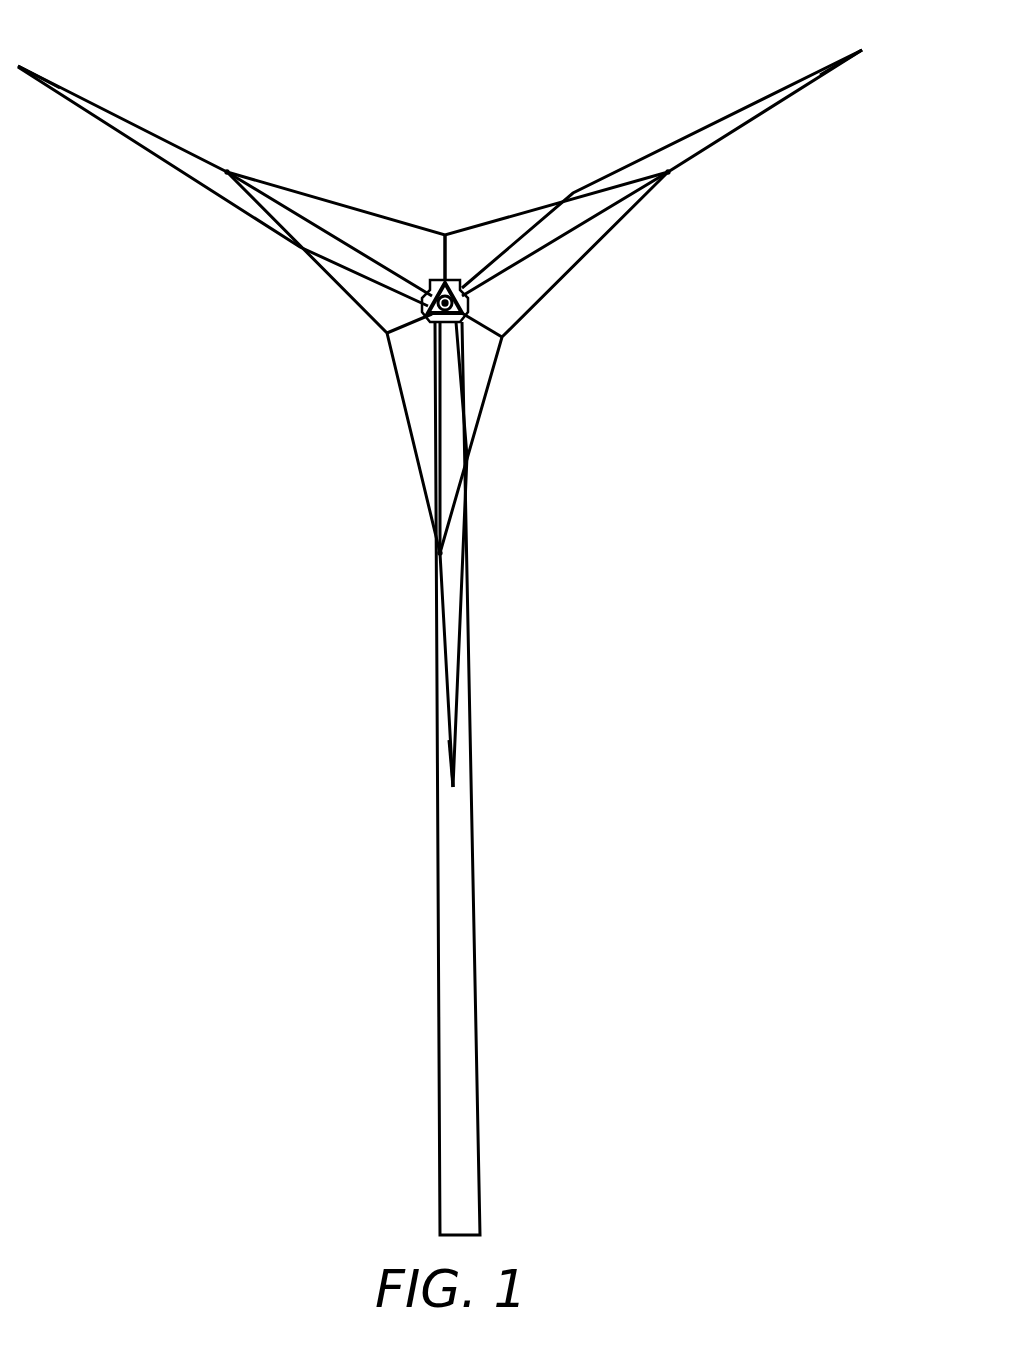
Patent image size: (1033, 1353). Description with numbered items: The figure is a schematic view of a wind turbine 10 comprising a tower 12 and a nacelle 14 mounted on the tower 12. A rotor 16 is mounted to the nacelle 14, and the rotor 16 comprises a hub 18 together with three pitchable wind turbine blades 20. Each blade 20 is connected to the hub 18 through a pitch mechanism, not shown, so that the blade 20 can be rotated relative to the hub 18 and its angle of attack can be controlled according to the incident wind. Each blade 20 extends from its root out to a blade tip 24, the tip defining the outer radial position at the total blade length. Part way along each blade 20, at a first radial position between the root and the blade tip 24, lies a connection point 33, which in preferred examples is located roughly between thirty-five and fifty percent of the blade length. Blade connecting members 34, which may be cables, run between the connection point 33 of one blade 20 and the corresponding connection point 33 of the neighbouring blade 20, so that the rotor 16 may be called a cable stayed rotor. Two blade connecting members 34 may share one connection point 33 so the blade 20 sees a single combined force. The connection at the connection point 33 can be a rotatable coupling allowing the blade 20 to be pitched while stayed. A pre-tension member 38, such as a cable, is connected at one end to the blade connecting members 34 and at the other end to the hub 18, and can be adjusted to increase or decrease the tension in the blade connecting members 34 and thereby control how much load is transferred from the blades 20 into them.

The wind turbine 10 is at (202, 576).
The tower 12 is at (465, 925).
The nacelle 14 is at (469, 310).
The rotor 16 is at (489, 192).
The hub 18 is at (432, 330).
The wind turbine blade 20 is at (146, 164).
The blade tip 24 is at (18, 66).
The connection point 33 is at (217, 157).
The blade connecting member 34 is at (377, 213).
The pre-tension member 38 is at (483, 330).